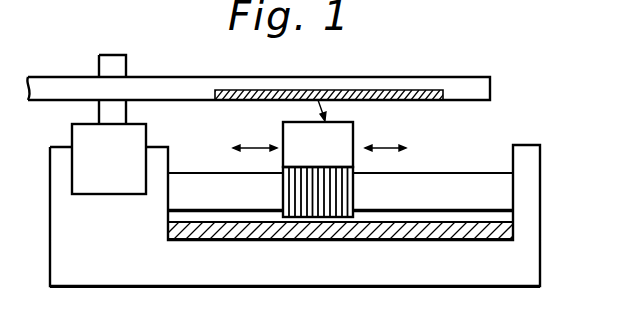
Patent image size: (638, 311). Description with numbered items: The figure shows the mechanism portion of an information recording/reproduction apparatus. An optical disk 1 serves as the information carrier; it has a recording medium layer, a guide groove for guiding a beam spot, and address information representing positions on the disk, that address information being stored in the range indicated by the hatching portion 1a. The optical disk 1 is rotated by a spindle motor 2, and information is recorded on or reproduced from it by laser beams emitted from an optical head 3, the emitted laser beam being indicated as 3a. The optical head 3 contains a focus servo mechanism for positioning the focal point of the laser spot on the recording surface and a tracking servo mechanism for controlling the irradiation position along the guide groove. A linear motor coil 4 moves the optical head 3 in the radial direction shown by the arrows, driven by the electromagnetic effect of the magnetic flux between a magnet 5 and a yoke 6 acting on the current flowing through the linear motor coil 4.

The optical disk 1 is at (460, 77).
The hatching portion 1a is at (435, 99).
The spindle motor 2 is at (147, 136).
The optical head 3 is at (355, 128).
The laser beam 3a is at (318, 100).
The linear motor coil 4 is at (353, 190).
The magnet 5 is at (502, 234).
The yoke 6 is at (497, 210).